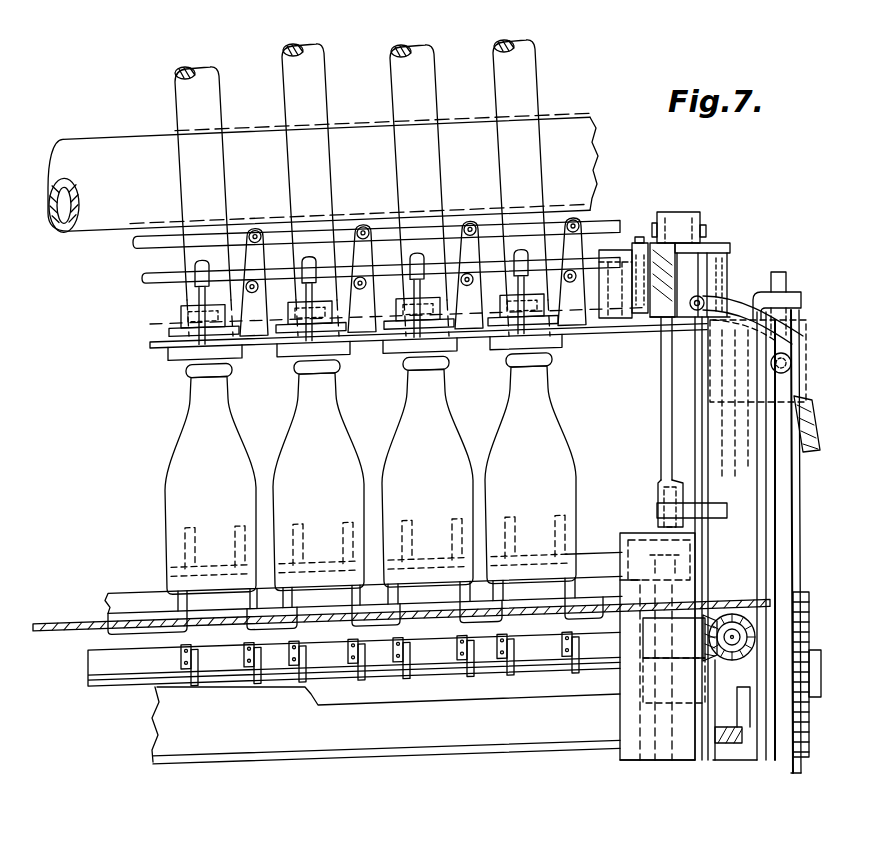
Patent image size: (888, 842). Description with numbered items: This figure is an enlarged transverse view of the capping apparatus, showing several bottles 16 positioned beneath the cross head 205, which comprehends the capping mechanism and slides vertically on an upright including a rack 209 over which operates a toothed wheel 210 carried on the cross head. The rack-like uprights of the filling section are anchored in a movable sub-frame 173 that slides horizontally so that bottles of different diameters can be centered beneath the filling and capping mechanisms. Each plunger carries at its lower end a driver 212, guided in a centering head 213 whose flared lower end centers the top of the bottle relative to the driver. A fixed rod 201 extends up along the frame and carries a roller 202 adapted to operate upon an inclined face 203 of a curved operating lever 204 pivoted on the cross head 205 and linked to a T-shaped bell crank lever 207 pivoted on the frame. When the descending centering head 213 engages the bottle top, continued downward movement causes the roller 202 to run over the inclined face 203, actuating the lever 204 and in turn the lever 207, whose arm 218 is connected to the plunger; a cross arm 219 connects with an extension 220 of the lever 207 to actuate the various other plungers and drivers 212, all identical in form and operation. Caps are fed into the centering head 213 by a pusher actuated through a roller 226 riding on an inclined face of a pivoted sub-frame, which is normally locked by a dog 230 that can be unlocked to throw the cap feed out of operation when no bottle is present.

The movable sub-frame 173 is at (116, 148).
The driver 212 is at (288, 86).
The cross arm 219 is at (447, 231).
The bell crank lever 207 is at (588, 262).
The arm 218 is at (549, 272).
The extension 220 is at (583, 250).
The dog 230 is at (678, 274).
The roller 226 is at (721, 239).
The toothed wheel 210 is at (727, 307).
The roller 202 is at (790, 339).
The inclined face 203 is at (803, 373).
The curved operating lever 204 is at (812, 416).
The rack 209 is at (724, 400).
The fixed rod 201 is at (792, 535).
The cross head 205 is at (378, 342).
The centering head 213 is at (502, 341).
The bottles 16 is at (517, 393).